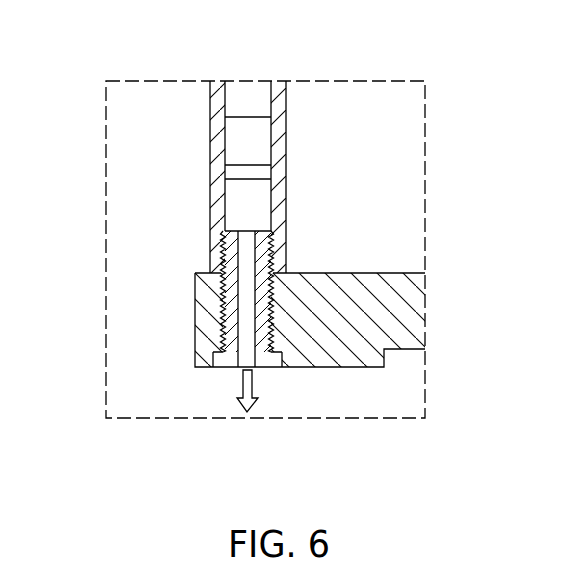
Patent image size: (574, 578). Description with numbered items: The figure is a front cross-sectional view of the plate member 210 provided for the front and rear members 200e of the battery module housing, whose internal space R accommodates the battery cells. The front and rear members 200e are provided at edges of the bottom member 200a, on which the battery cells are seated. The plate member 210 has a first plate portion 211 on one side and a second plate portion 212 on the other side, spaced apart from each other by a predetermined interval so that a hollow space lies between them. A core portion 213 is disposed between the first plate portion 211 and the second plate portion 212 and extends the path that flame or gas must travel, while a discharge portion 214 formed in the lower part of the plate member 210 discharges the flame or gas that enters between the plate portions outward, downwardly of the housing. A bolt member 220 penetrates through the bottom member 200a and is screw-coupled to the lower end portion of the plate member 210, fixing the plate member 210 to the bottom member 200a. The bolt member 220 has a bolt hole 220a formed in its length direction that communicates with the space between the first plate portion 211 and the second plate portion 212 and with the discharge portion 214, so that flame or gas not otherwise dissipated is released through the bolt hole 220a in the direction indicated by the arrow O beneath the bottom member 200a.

The internal space R is at (399, 98).
The front and rear members 200e is at (198, 135).
The bottom member 200a is at (400, 308).
The plate member 210 is at (389, 177).
The first plate portion 211 is at (286, 135).
The second plate portion 212 is at (286, 197).
The core portion 213 is at (243, 173).
The discharge portion 214 is at (244, 196).
The bolt member 220 is at (218, 333).
The bolt hole 220a is at (244, 352).
The direction O is at (290, 413).